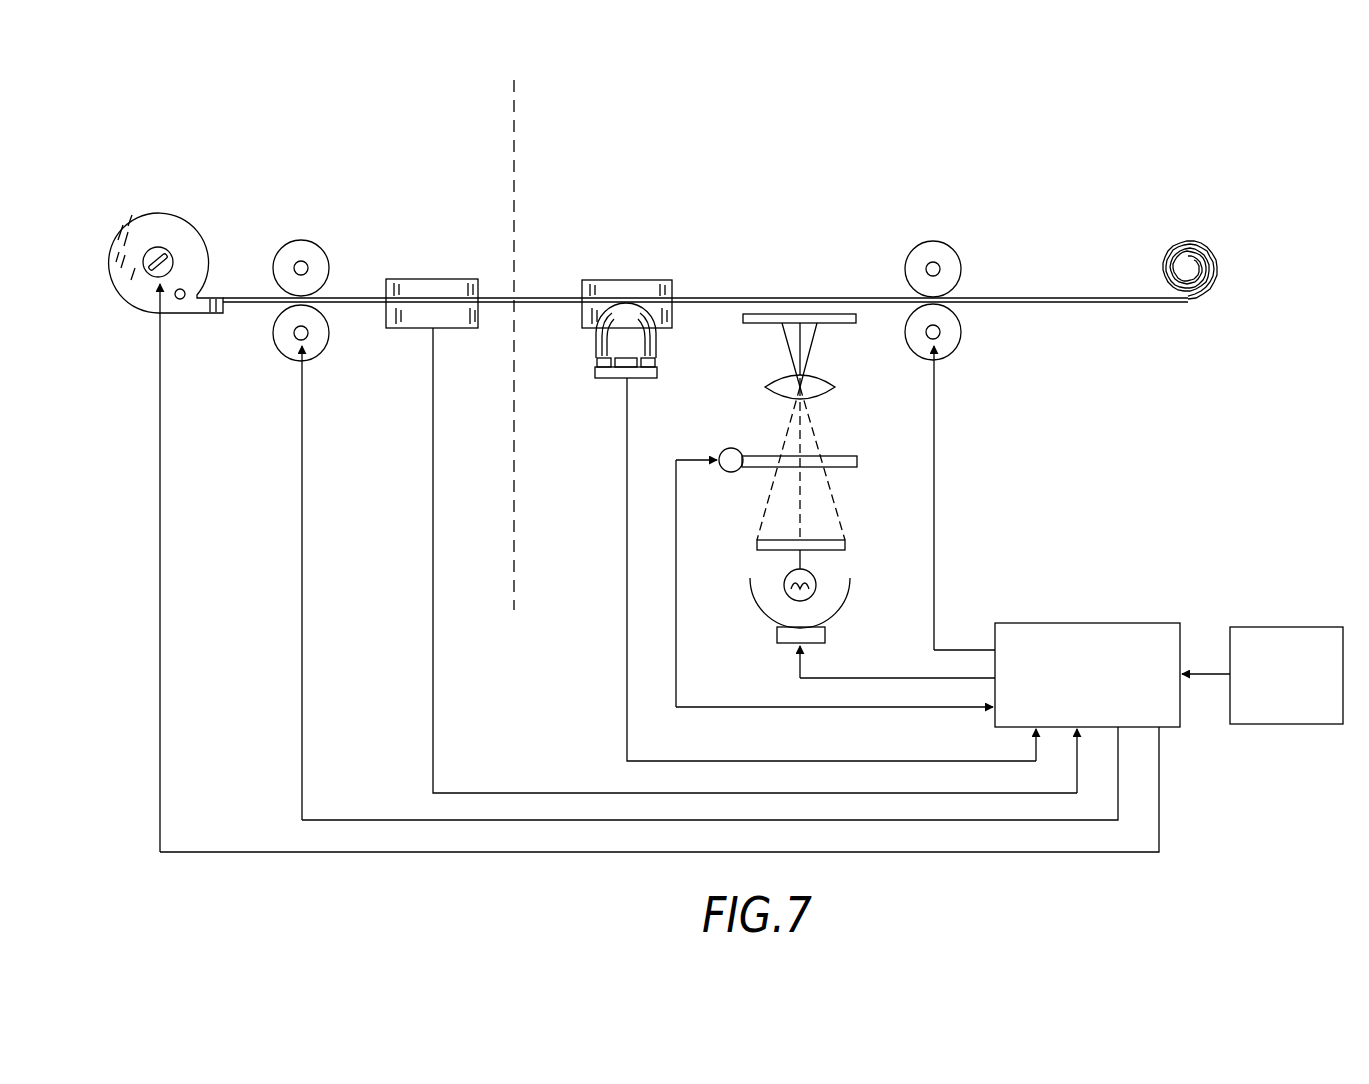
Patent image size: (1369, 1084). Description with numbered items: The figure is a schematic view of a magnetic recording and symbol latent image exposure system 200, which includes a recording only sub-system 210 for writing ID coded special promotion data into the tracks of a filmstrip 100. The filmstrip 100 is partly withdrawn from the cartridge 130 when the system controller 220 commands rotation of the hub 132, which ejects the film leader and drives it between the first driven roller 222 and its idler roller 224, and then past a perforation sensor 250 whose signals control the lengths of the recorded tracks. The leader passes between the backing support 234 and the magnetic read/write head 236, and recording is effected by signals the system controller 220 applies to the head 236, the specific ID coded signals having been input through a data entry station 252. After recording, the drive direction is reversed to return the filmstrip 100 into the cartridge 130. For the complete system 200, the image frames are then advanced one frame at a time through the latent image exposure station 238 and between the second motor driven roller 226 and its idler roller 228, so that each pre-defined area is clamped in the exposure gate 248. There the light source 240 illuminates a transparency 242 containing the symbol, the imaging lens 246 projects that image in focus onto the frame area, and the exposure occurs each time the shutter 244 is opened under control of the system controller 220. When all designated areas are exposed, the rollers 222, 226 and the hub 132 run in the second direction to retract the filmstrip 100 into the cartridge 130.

The filmstrip 100 is at (1122, 300).
The cartridge 130 is at (185, 216).
The hub 132 is at (157, 247).
The magnetic recording and symbol latent image exposure system 200 is at (587, 181).
The recording only sub-system 210 is at (439, 181).
The system controller 220 is at (1087, 623).
The first driven roller 222 is at (278, 357).
The idler roller 224 is at (303, 262).
The second motor driven roller 226 is at (961, 334).
The idler roller 228 is at (961, 267).
The backing support 234 is at (627, 279).
The magnetic read/write head 236 is at (595, 357).
The latent image exposure station 238 is at (799, 285).
The light source 240 is at (843, 605).
The transparency 242 is at (757, 548).
The shutter 244 is at (729, 472).
The imaging lens 246 is at (765, 387).
The exposure gate 248 is at (743, 318).
The perforation sensor 250 is at (430, 279).
The data entry station 252 is at (1289, 627).